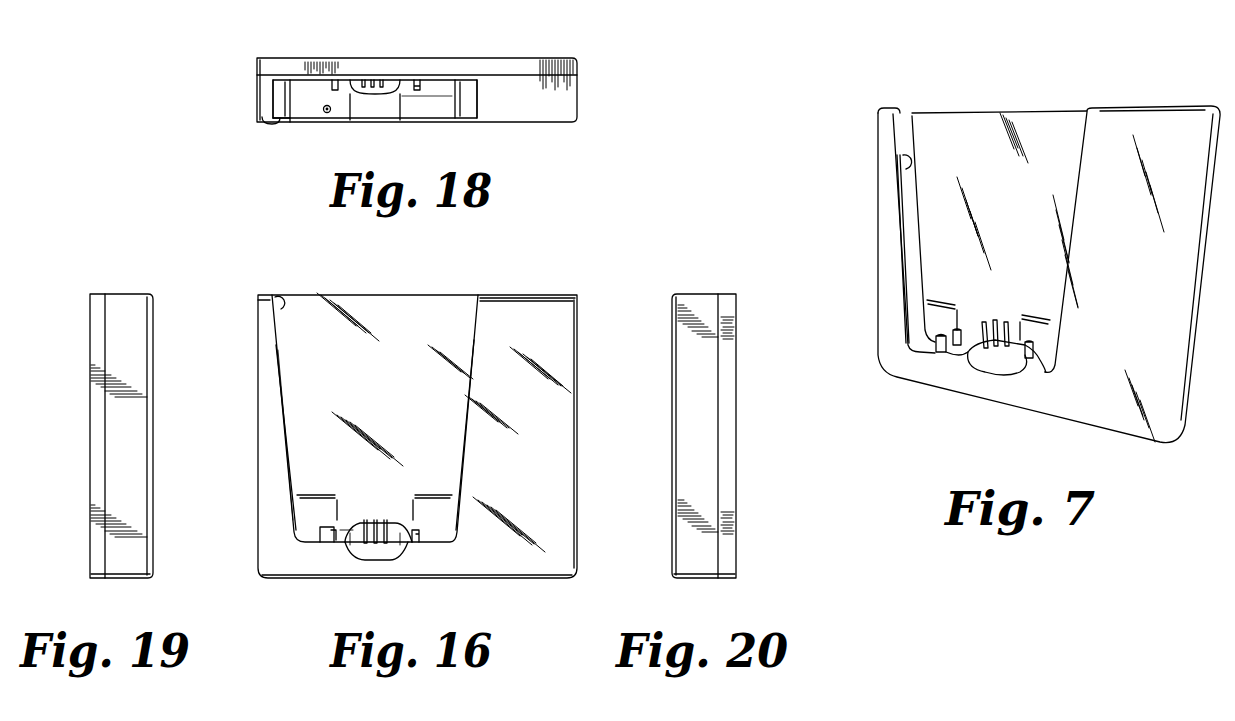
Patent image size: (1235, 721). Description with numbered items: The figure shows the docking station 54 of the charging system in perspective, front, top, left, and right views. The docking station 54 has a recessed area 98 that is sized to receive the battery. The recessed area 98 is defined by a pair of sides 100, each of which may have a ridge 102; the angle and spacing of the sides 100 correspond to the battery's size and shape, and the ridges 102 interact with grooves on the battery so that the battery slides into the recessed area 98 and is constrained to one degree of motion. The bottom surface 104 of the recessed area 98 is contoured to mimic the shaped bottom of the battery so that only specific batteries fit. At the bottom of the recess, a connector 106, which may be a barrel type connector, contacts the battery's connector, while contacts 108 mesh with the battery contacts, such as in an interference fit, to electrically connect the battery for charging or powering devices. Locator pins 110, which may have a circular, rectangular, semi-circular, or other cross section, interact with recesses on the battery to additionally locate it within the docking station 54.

In FIG. 18, the docking station 54 is at (582, 48).
In FIG. 16, the docking station 54 is at (532, 272).
In FIG. 19, the docking station 54 is at (104, 279).
In FIG. 20, the docking station 54 is at (705, 279).
In FIG. 7, the docking station 54 is at (1118, 75).
In FIG. 18, the recessed area 98 is at (375, 101).
In FIG. 16, the recessed area 98 is at (391, 413).
In FIG. 7, the recessed area 98 is at (1052, 138).
In FIG. 18, the sides 100 is at (465, 92).
In FIG. 16, the sides 100 is at (280, 302).
In FIG. 7, the sides 100 is at (903, 157).
In FIG. 18, the ridge 102 is at (268, 118).
In FIG. 16, the ridge 102 is at (288, 385).
In FIG. 7, the ridge 102 is at (900, 245).
In FIG. 18, the bottom surface 104 is at (422, 100).
In FIG. 16, the bottom surface 104 is at (346, 548).
In FIG. 7, the bottom surface 104 is at (982, 372).
In FIG. 18, the connector 106 is at (322, 110).
In FIG. 16, the connector 106 is at (320, 535).
In FIG. 7, the connector 106 is at (930, 352).
In FIG. 18, the contacts 108 is at (363, 88).
In FIG. 16, the contacts 108 is at (382, 547).
In FIG. 7, the contacts 108 is at (995, 350).
In FIG. 18, the locator pins 110 is at (420, 86).
In FIG. 16, the locator pins 110 is at (420, 536).
In FIG. 7, the locator pins 110 is at (1032, 360).